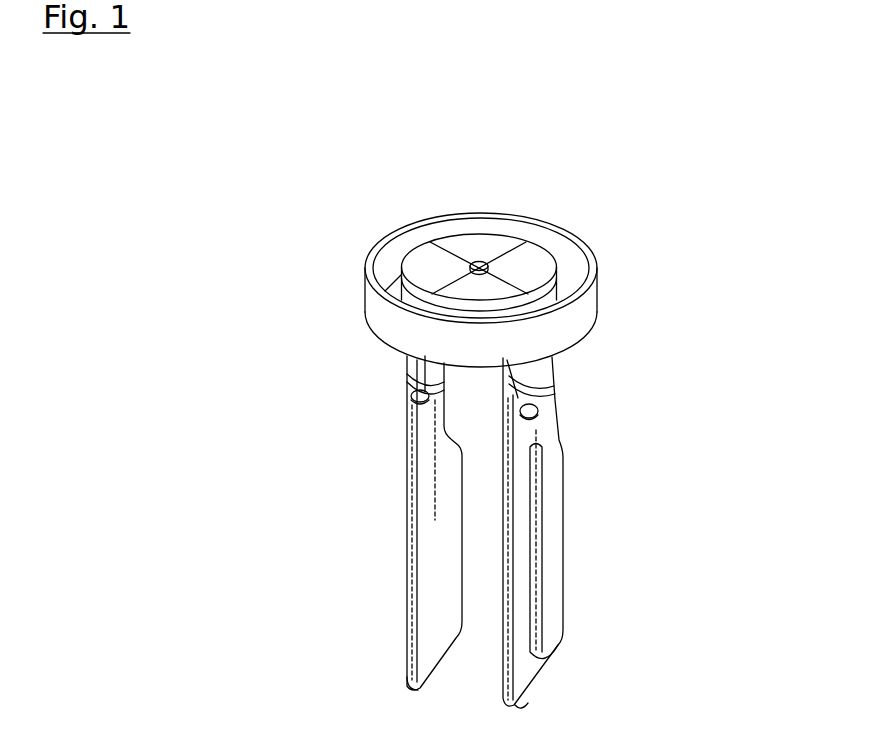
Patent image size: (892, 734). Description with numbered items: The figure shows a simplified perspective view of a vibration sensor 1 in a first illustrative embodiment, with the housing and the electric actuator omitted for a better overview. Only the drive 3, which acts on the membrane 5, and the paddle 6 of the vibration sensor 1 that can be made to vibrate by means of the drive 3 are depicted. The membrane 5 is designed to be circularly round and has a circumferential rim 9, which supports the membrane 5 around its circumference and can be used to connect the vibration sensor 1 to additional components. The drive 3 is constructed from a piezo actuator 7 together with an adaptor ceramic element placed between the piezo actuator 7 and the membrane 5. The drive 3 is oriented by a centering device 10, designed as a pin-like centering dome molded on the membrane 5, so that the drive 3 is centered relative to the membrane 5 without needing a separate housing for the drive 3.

The vibration sensor 1 is at (272, 193).
The drive 3 is at (580, 256).
The membrane 5 is at (393, 287).
The paddle 6 is at (438, 545).
The piezo actuator 7 is at (527, 265).
The circumferential rim 9 is at (577, 318).
The centering device 10 is at (483, 262).